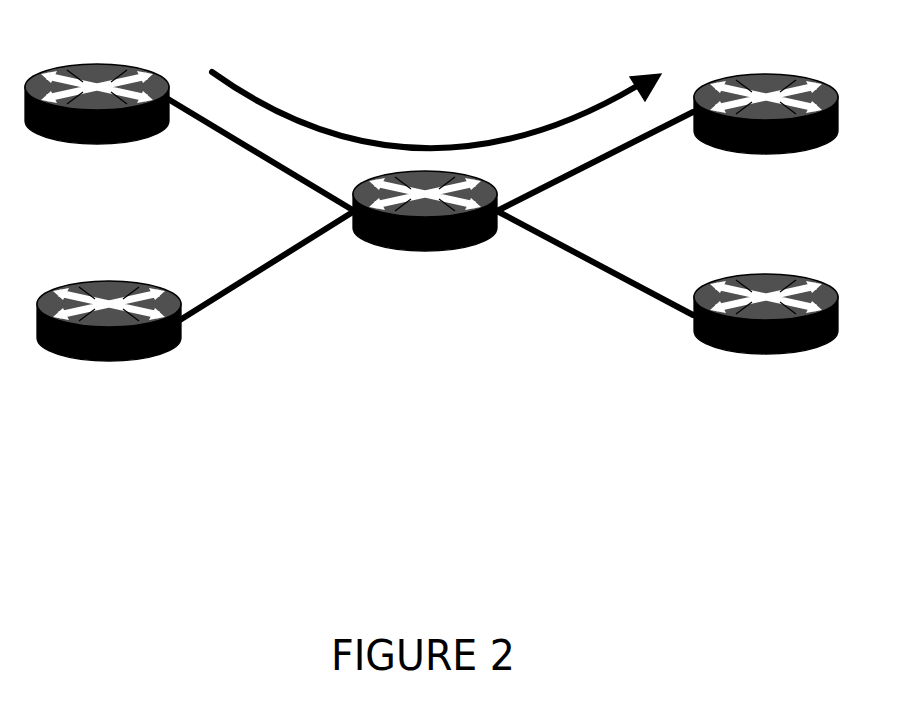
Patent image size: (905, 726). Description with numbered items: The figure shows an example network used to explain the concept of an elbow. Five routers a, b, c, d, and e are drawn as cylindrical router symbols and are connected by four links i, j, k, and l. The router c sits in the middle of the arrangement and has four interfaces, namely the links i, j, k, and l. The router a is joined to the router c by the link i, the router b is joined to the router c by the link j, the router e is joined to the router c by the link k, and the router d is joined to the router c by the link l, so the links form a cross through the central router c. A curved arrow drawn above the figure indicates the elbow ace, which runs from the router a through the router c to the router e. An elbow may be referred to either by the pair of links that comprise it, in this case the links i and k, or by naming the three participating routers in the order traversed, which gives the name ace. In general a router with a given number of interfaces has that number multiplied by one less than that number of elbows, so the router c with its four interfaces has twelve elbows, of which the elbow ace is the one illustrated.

The router a is at (125, 66).
The router b is at (131, 284).
The router c is at (451, 250).
The router d is at (781, 276).
The router e is at (794, 78).
The link i is at (246, 155).
The link j is at (276, 256).
The link k is at (665, 136).
The link l is at (605, 268).
The elbow ace is at (436, 110).